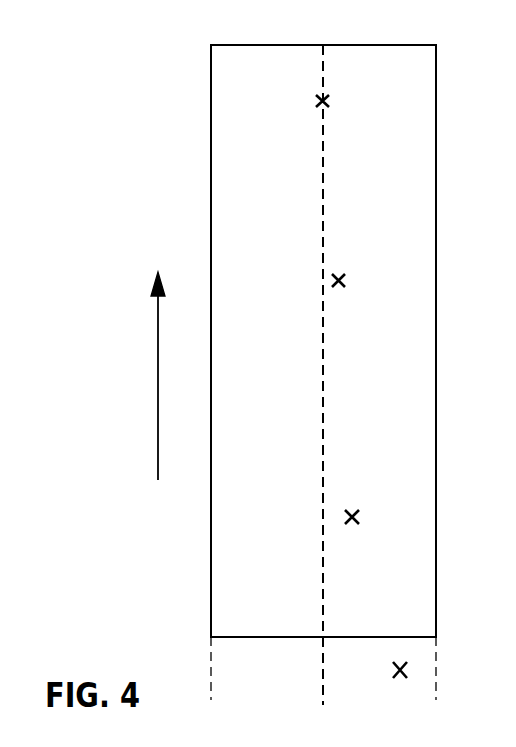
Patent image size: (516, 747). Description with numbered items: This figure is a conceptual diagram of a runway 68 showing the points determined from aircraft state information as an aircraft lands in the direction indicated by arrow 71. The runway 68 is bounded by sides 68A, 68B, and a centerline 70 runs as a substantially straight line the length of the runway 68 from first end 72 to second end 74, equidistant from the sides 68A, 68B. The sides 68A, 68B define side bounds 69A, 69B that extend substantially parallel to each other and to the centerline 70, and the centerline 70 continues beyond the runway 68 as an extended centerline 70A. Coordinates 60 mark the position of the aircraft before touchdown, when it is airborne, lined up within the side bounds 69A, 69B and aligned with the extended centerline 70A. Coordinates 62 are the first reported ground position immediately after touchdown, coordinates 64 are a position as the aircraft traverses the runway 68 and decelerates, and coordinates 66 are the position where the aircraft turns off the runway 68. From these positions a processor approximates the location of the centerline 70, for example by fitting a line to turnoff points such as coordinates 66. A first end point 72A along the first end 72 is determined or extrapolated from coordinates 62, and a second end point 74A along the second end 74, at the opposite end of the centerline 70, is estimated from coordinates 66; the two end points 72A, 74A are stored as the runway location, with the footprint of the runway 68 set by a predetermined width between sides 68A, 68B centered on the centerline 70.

The coordinates 60 is at (394, 671).
The coordinates 62 is at (360, 516).
The coordinates 64 is at (345, 283).
The coordinates 66 is at (329, 99).
The runway 68 is at (441, 123).
The side of runway 68A is at (210, 552).
The side of runway 68B is at (436, 540).
The side bound 69A is at (210, 678).
The side bound 69B is at (438, 658).
The centerline 70 is at (326, 192).
The extended centerline 70A is at (320, 654).
The arrow 71 is at (157, 383).
The first end 72 is at (229, 636).
The first end point 72A is at (324, 636).
The second end 74 is at (229, 45).
The second end point 74A is at (323, 45).